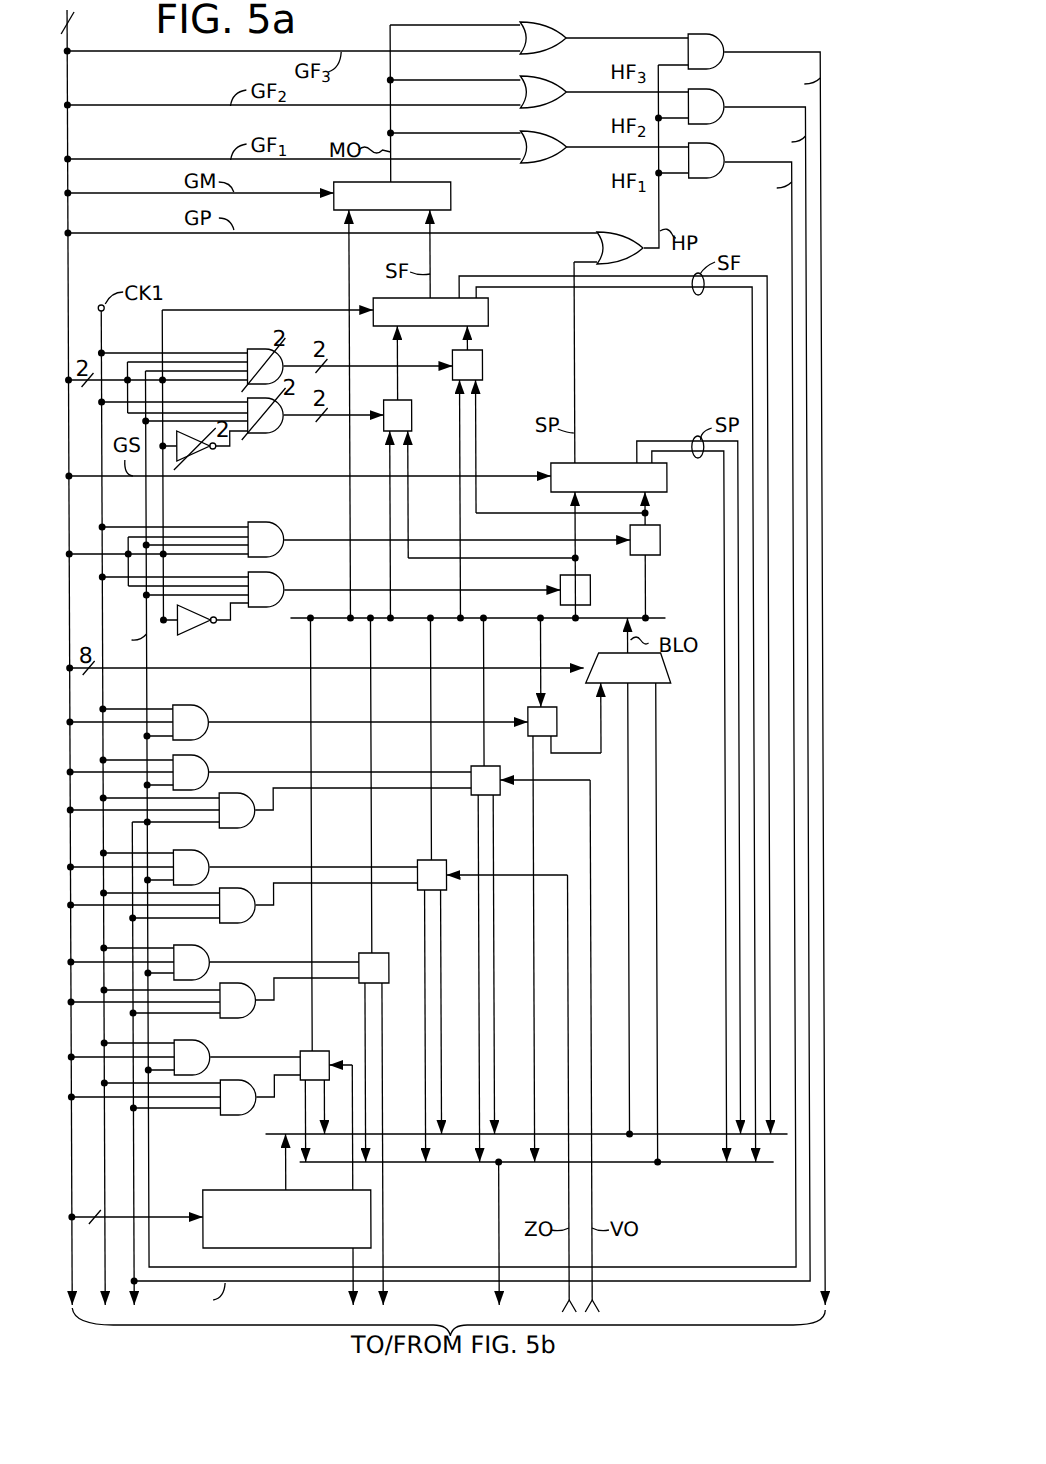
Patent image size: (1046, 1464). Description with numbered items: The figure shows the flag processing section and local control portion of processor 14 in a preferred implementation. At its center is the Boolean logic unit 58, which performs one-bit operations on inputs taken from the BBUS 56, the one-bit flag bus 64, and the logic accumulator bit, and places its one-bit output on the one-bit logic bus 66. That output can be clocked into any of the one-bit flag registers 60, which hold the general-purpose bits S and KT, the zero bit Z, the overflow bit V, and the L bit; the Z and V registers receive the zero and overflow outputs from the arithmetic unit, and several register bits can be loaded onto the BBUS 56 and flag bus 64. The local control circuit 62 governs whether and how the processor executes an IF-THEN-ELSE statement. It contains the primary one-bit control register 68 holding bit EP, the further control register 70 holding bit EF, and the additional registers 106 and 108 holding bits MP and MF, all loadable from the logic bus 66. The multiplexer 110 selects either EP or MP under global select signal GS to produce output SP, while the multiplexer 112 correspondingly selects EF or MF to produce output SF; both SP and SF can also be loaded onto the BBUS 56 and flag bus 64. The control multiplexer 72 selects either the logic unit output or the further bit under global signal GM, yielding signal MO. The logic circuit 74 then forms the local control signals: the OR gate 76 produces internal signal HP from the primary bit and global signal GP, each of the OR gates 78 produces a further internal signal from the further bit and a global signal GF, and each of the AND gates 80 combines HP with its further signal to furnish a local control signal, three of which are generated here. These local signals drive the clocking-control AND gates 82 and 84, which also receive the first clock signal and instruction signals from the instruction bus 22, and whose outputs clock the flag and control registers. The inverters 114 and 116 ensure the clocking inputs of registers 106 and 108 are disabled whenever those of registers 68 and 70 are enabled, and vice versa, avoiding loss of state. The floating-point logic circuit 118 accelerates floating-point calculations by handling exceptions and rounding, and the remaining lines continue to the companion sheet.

The instruction bus 22 is at (72, 84).
The clocking-control AND gates 82 is at (198, 1040).
The clocking-control AND gates 84 is at (252, 826).
The control multiplexer 72 is at (452, 194).
The OR gates 78 is at (553, 54).
The AND gates 80 is at (720, 70).
The logic circuit 74 is at (603, 209).
The OR gate 76 is at (626, 233).
The multiplexer 112 is at (447, 298).
The multiplexer 110 is at (606, 463).
The local control circuit 62 is at (625, 366).
The dedicated further one-bit register 108 is at (483, 366).
The dedicated further one-bit control register 70 is at (413, 415).
The dedicated primary one-bit register 106 is at (660, 540).
The dedicated primary one-bit control register 68 is at (590, 592).
The inverter 116 is at (192, 456).
The inverter 114 is at (195, 628).
The one-bit logic bus 66 is at (298, 624).
The Boolean logic unit 58 is at (672, 666).
The one-bit flag registers 60 is at (556, 730).
The one-bit flag bus 64 is at (270, 1138).
The BBUS 56 is at (700, 1163).
The processor 14 is at (703, 843).
The floating-point logic circuit 118 is at (200, 1227).